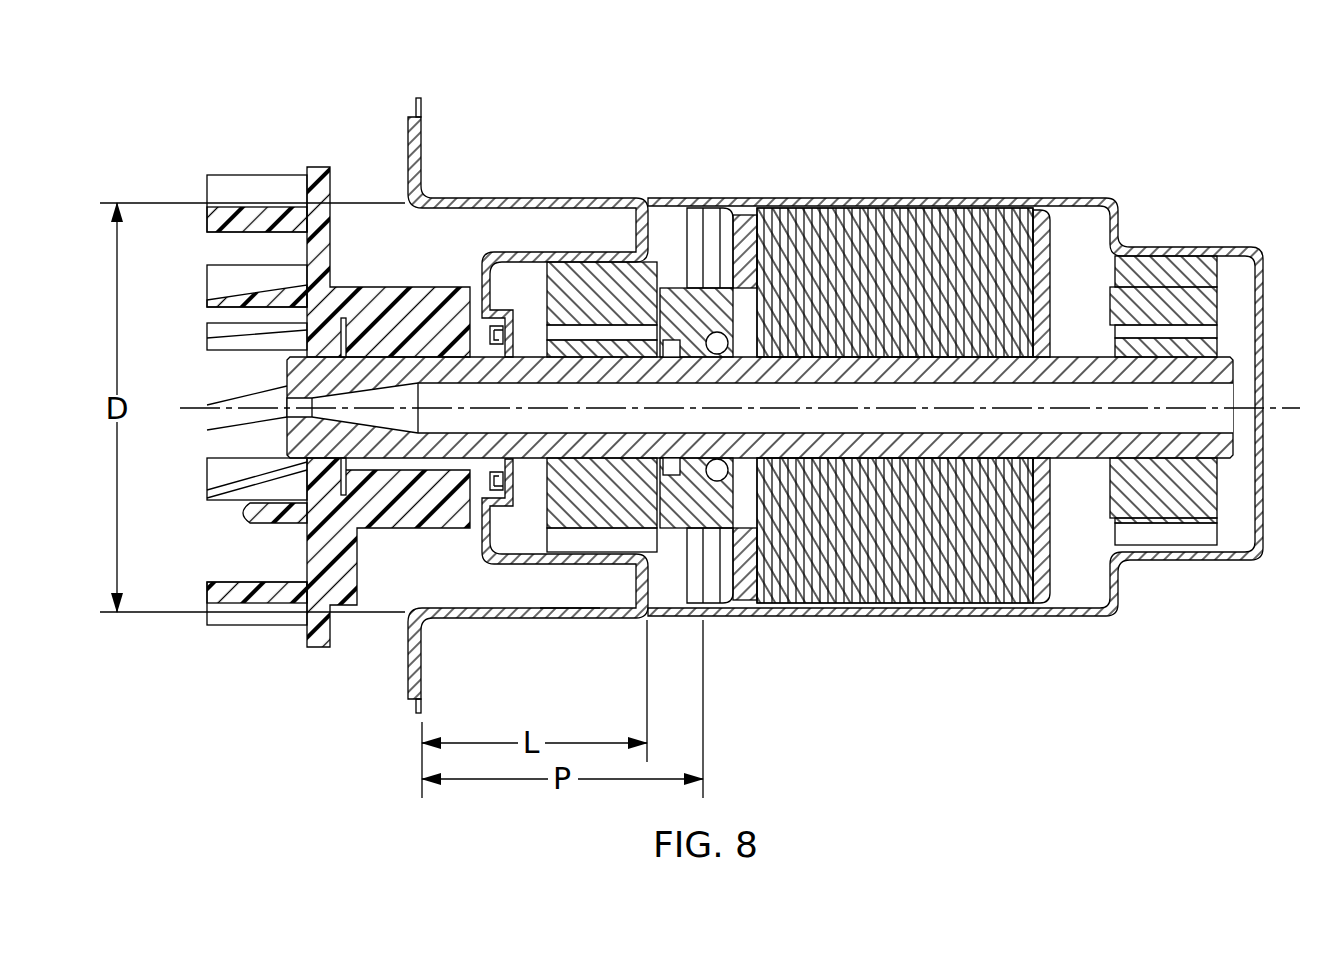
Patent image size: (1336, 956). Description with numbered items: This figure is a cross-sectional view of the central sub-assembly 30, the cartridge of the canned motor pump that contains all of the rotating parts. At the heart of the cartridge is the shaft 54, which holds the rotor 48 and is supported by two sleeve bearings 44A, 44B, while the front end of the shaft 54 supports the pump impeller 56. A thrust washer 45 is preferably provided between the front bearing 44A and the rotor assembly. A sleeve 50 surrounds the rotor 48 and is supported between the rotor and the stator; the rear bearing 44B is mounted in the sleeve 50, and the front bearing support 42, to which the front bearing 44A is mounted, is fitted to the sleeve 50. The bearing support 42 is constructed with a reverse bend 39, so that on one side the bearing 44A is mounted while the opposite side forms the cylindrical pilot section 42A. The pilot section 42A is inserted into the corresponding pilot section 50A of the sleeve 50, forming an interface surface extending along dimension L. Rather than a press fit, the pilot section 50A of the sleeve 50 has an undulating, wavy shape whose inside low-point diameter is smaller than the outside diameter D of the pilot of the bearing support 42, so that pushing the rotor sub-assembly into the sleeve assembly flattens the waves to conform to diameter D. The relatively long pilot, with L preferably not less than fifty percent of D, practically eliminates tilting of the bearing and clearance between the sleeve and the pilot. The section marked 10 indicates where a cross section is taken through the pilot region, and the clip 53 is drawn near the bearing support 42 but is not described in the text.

The section line 10 is at (522, 140).
The central sub-assembly 30 is at (852, 187).
The reverse bend 39 is at (543, 233).
The front bearing support 42 is at (651, 224).
The pilot section 42A is at (524, 602).
The sleeve bearing 44A is at (642, 278).
The sleeve bearing 44B is at (1160, 262).
The thrust washer 45 is at (718, 512).
The rotor 48 is at (960, 250).
The sleeve 50 is at (1070, 196).
The pilot section 50A is at (561, 620).
The retaining clip 53 is at (485, 468).
The shaft 54 is at (1088, 456).
The pump impeller 56 is at (240, 458).